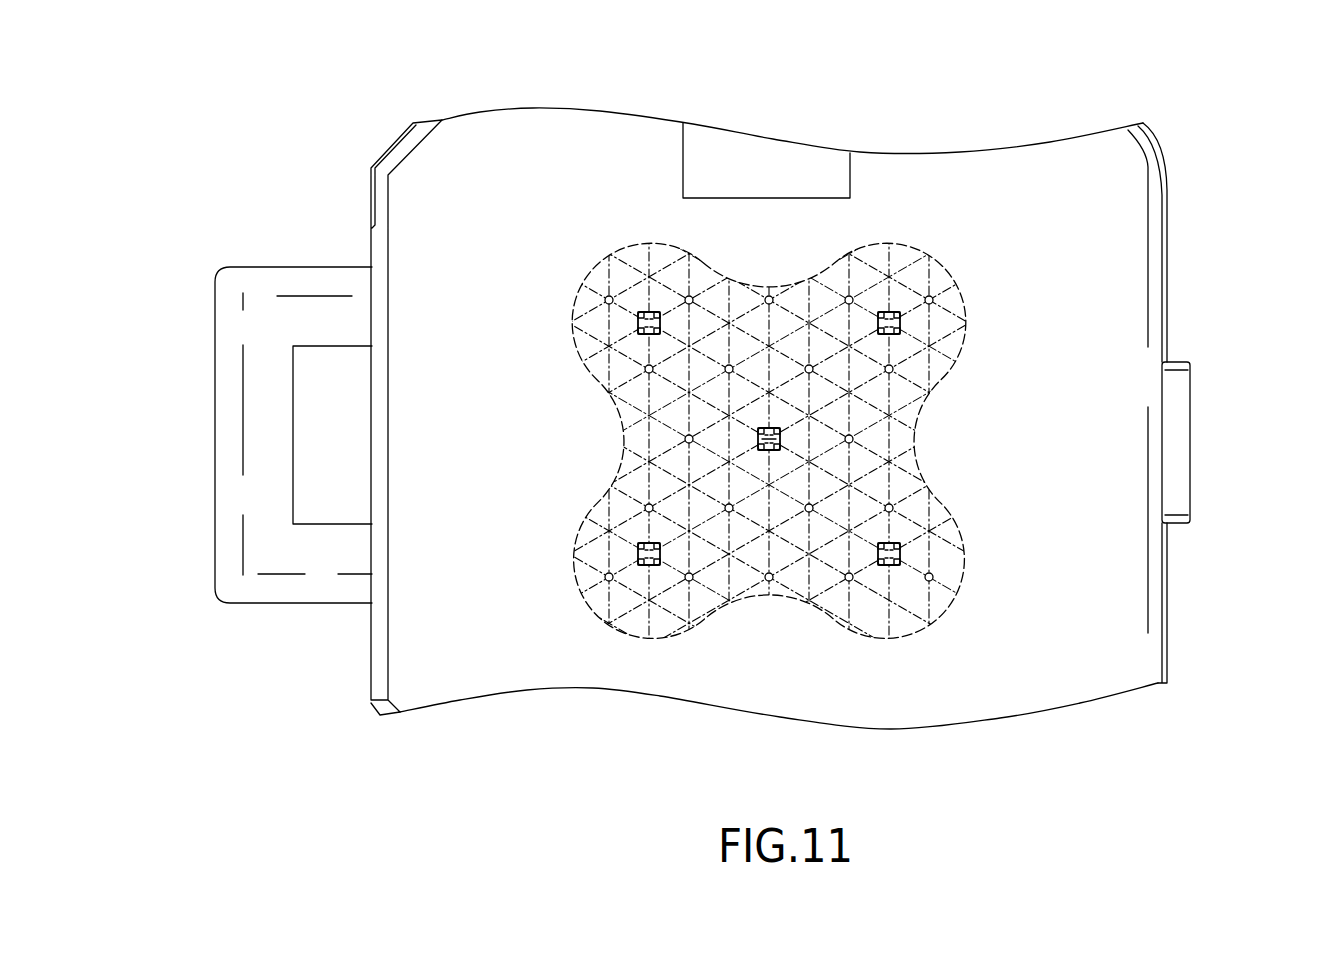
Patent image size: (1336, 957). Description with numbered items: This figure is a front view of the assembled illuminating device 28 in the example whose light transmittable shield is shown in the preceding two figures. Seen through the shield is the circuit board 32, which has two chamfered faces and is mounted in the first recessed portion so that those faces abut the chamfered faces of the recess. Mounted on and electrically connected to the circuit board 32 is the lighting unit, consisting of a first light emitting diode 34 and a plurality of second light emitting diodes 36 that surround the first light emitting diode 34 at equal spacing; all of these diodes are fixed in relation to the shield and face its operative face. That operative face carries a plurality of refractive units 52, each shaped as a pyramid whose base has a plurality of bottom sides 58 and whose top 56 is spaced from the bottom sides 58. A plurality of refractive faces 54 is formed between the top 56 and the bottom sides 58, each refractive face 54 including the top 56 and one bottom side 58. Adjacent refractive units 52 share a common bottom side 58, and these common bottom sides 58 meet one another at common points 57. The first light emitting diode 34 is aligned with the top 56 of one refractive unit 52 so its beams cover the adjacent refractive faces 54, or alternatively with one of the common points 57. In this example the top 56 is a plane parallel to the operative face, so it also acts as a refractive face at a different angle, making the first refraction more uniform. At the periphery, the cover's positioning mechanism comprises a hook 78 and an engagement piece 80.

The illuminating device 28 is at (328, 111).
The circuit board 32 is at (1092, 165).
The first light emitting diode 34 is at (775, 425).
The second light emitting diodes 36 is at (644, 310).
The refractive units 52 is at (834, 272).
The refractive faces 54 is at (875, 298).
The top 56 is at (764, 426).
The common points 57 is at (878, 322).
The bottom sides 58 is at (867, 330).
The hook 78 is at (1182, 476).
The engagement piece 80 is at (225, 453).